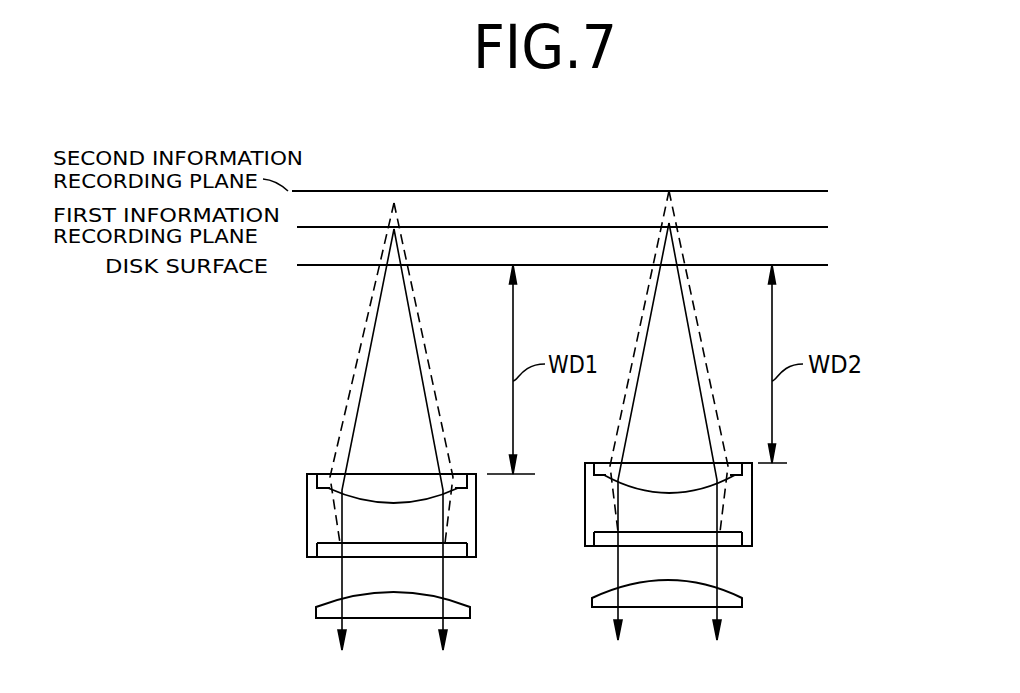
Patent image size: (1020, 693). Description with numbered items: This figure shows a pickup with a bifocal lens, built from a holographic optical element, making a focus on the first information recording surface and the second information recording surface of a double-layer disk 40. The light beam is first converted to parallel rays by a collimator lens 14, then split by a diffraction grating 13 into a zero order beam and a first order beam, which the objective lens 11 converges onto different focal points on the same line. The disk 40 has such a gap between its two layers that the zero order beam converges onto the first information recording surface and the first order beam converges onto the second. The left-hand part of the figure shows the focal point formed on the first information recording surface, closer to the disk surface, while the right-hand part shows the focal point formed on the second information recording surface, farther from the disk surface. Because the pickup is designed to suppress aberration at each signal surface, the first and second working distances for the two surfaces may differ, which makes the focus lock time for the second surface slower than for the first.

The double-layer disk 40 is at (840, 267).
The objective lens 11 is at (742, 472).
The diffraction grating 13 is at (745, 539).
The collimator lens 14 is at (742, 603).